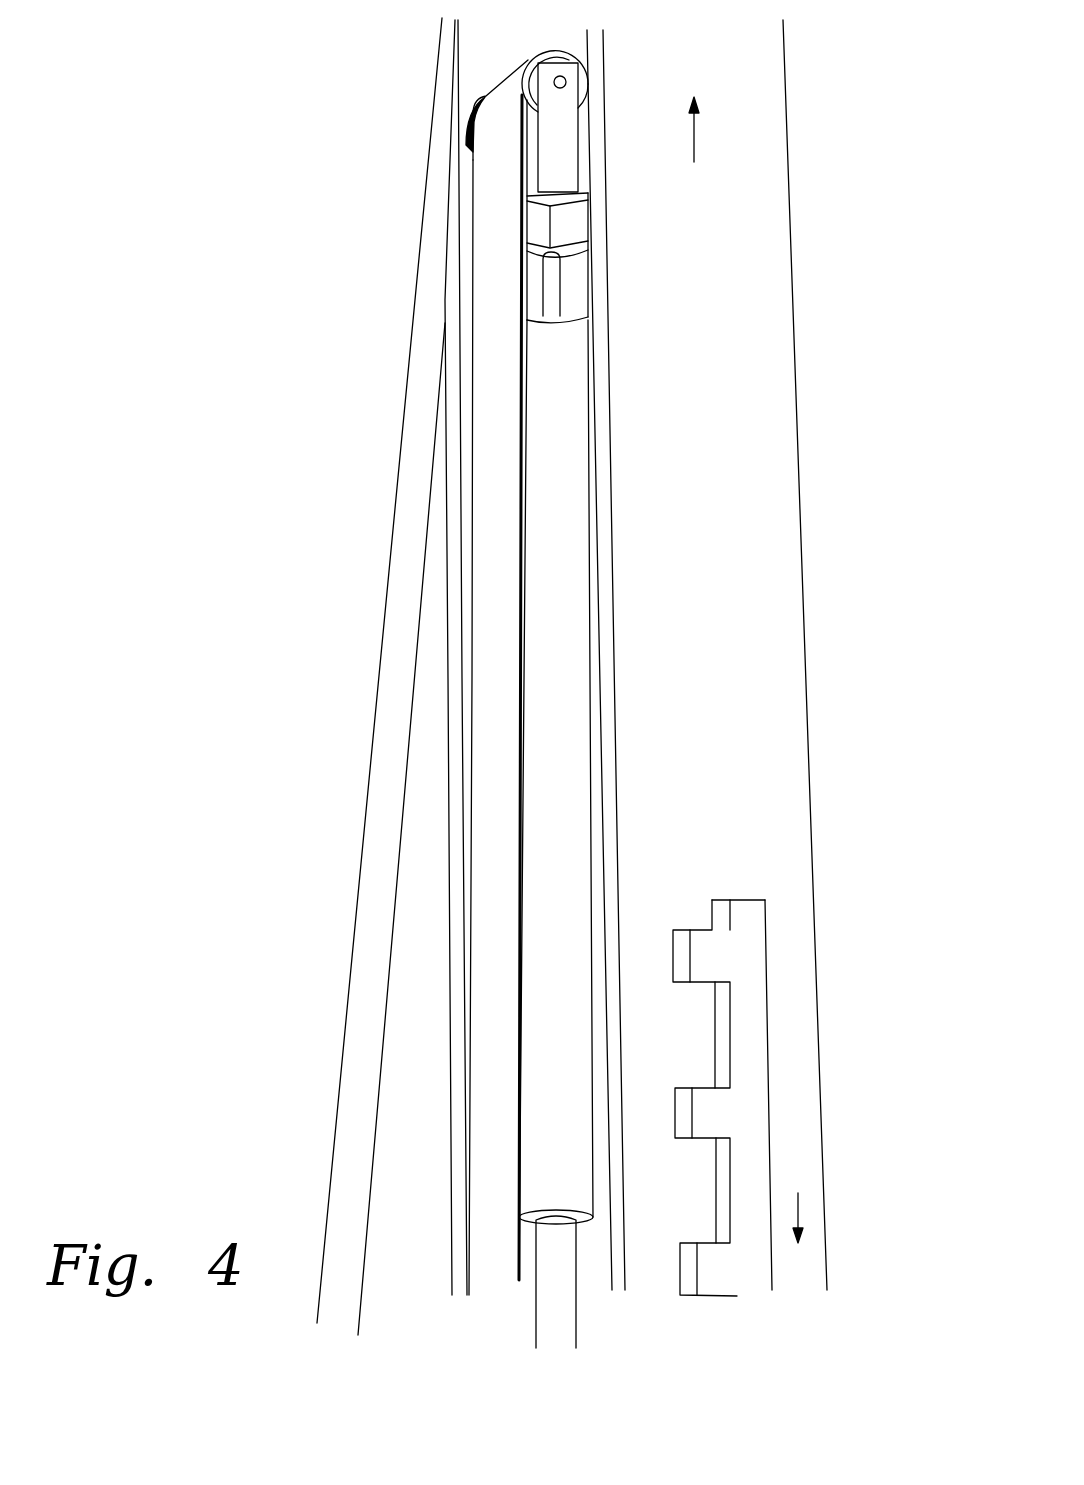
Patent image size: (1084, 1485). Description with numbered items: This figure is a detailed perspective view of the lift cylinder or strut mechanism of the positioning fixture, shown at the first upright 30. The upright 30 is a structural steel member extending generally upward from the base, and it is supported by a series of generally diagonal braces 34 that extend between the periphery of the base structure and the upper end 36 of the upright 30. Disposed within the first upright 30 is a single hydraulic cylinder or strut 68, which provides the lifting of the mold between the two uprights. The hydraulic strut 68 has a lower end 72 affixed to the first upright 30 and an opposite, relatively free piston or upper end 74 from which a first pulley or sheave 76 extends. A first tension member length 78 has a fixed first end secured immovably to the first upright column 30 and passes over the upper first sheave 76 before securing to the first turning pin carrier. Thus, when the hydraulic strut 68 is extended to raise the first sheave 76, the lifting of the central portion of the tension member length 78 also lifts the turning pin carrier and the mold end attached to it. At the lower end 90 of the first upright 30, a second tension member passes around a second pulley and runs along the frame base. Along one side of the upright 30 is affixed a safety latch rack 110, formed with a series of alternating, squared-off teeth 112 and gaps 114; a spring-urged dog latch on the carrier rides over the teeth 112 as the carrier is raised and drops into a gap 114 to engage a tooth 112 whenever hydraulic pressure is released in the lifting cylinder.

The first upright 30 is at (727, 589).
The diagonal braces 34 is at (362, 845).
The upper end of the first upright 36 is at (697, 157).
The hydraulic cylinder or strut 68 is at (578, 758).
The lower end of the hydraulic strut 72 is at (501, 1340).
The piston or upper end of the hydraulic strut 74 is at (561, 268).
The first pulley or sheave 76 is at (530, 58).
The first tension member length 78 is at (515, 298).
The lower end of the first upright 90 is at (799, 1194).
The safety latch rack 110 is at (768, 1055).
The teeth 112 is at (690, 982).
The gaps 114 is at (710, 1182).